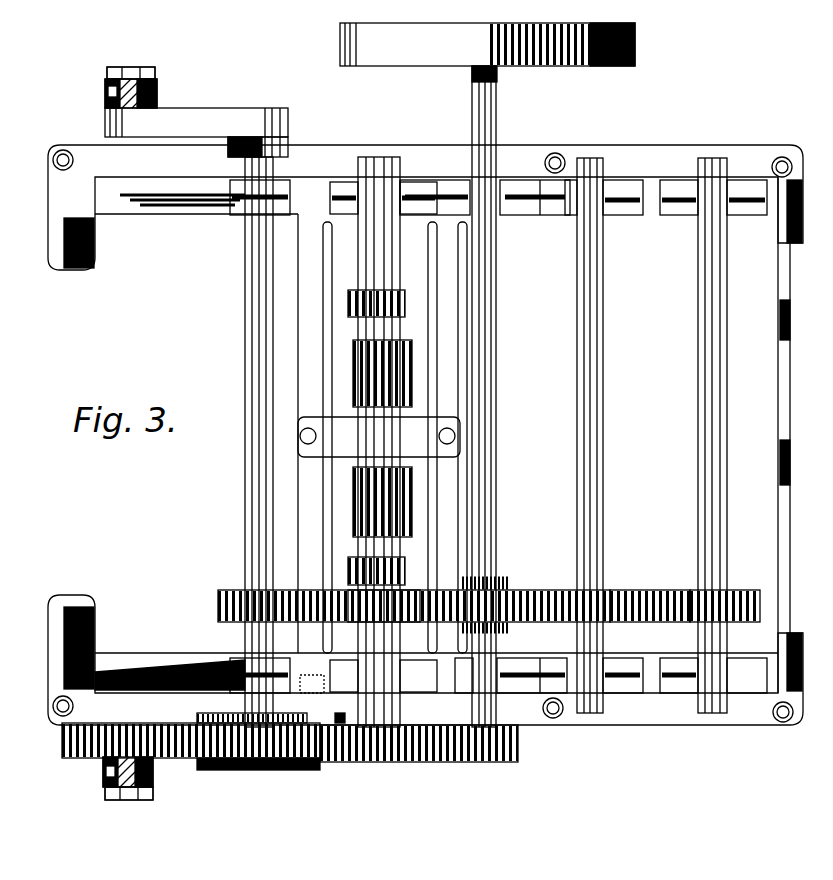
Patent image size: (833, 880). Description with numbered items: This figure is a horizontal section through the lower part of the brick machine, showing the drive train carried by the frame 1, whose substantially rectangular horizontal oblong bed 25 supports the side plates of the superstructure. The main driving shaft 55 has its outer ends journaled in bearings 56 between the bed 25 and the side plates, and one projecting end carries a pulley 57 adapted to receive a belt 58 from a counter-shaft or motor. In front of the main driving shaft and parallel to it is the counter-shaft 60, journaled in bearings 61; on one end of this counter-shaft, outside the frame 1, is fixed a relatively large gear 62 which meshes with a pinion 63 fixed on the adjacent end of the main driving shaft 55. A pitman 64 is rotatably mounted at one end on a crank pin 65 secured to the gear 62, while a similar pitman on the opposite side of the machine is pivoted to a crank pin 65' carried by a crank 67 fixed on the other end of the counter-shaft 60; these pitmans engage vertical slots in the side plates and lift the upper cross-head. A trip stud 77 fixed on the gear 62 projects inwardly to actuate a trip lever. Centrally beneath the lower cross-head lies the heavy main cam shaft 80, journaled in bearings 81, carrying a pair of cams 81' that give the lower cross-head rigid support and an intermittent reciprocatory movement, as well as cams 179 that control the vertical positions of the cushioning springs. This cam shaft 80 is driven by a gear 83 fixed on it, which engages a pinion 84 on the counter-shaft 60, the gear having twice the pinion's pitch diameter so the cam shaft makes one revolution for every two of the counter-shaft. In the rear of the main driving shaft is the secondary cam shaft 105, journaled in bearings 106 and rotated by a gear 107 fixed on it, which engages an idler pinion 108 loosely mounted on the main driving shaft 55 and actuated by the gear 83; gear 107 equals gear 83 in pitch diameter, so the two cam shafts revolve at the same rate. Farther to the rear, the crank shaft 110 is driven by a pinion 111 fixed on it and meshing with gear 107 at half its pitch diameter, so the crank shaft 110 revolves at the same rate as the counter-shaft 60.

The frame 1 is at (150, 214).
The bed 25 is at (346, 140).
The main driving shaft 55 is at (499, 118).
The bearings 56 is at (508, 208).
The pulley 57 is at (610, 66).
The belt 58 is at (637, 48).
The counter-shaft 60 is at (245, 305).
The bearings 61 is at (240, 216).
The gear 62 is at (339, 758).
The pinion 63 is at (468, 762).
The pitman 64 is at (157, 97).
The crank pin 65 is at (146, 779).
The crank pin 65' is at (127, 72).
The crank 67 is at (224, 110).
The trip stud 77 is at (346, 718).
The main cam shaft 80 is at (399, 268).
The bearings 81 is at (368, 446).
The cams 81' is at (370, 438).
The gear 83 is at (408, 590).
The pinion 84 is at (218, 592).
The secondary cam shaft 105 is at (603, 430).
The bearings 106 is at (571, 216).
The gear 107 is at (622, 590).
The idler pinion 108 is at (509, 587).
The crank shaft 110 is at (698, 503).
The pinion 111 is at (680, 590).
The cam 179 is at (403, 312).